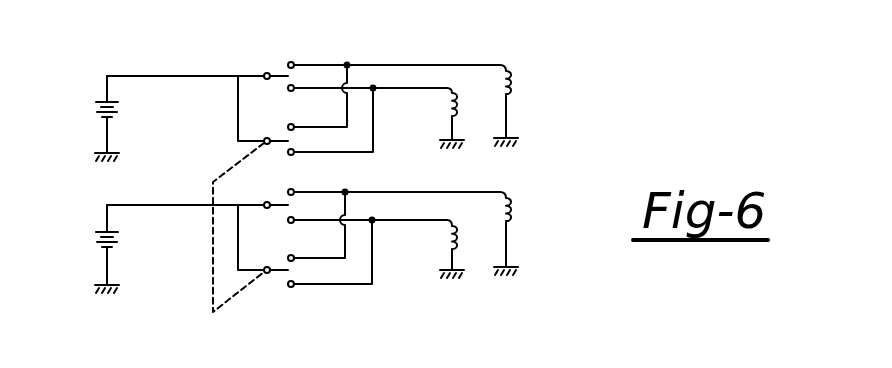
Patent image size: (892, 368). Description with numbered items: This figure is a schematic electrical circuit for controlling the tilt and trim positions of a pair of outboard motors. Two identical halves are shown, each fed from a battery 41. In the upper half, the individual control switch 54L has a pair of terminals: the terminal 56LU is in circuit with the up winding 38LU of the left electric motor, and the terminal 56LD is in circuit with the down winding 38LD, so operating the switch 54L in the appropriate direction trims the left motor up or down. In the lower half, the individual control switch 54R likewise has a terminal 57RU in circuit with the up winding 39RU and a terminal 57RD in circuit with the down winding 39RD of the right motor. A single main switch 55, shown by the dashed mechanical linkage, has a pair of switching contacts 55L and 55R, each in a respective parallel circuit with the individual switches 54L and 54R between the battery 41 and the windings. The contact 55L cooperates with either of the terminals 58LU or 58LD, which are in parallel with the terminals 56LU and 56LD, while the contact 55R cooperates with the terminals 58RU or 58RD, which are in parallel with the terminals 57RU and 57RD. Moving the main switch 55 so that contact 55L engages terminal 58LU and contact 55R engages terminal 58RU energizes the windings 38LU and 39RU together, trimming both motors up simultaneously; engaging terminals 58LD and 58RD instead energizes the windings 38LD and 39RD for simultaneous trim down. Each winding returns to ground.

The battery 41 is at (110, 113).
The individual control switch 54L is at (281, 73).
The switching contact 55L is at (287, 141).
The terminal 56LU is at (294, 62).
The terminal 56LD is at (294, 86).
The terminal 58LU is at (314, 117).
The terminal 58LD is at (294, 151).
The up winding 38LU is at (512, 87).
The down winding 38LD is at (458, 110).
The individual control switch 54R is at (282, 203).
The switching contact 55R is at (285, 272).
The main switch 55 is at (212, 262).
The terminal 57RU is at (294, 191).
The terminal 57RD is at (294, 219).
The terminal 58RU is at (294, 260).
The terminal 58RD is at (294, 286).
The up winding 39RU is at (512, 214).
The down winding 39RD is at (458, 238).